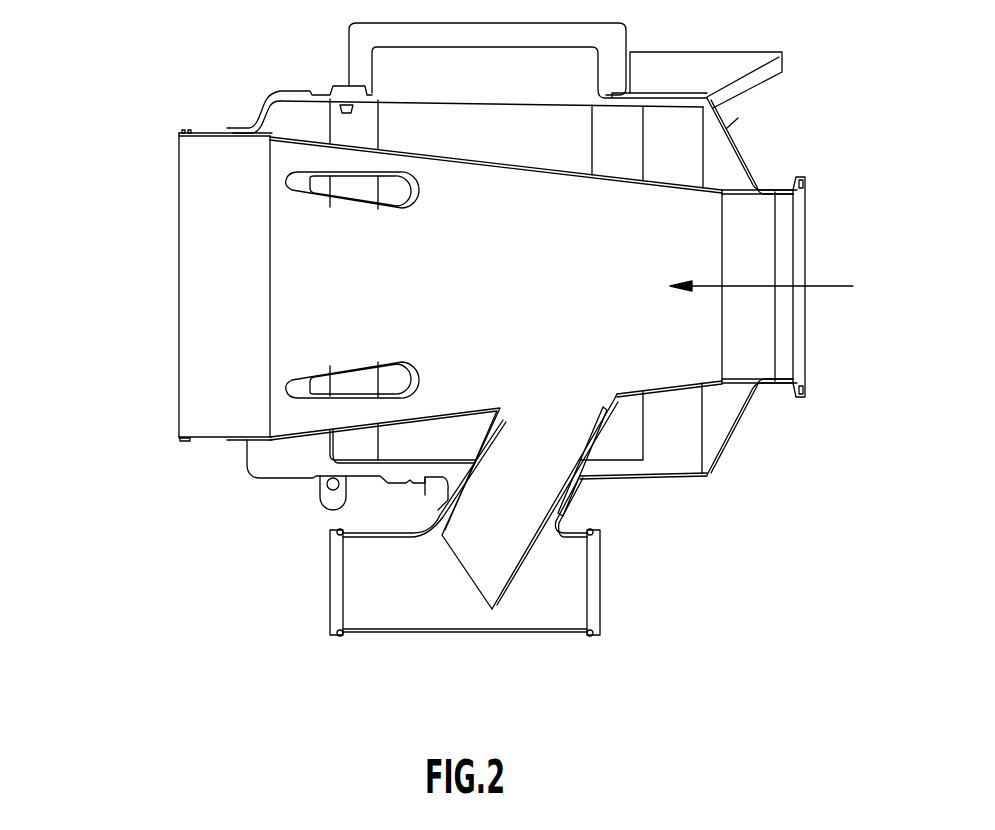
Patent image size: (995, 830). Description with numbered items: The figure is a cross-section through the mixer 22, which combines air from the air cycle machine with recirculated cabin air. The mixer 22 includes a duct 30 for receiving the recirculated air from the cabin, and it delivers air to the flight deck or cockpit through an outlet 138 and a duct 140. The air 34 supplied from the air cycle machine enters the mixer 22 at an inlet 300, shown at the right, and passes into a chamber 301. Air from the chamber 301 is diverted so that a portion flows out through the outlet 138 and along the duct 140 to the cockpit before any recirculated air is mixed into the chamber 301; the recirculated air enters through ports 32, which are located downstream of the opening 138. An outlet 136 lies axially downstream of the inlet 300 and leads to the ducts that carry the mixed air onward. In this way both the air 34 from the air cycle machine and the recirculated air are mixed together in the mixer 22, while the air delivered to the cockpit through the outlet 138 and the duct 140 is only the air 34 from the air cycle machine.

The mixer 22 is at (91, 64).
The duct 30 is at (388, 127).
The ports 32 is at (385, 197).
The air 34 is at (803, 283).
The inlet 300 is at (783, 225).
The chamber 301 is at (573, 311).
The outlet 136 is at (197, 277).
The outlet 138 is at (613, 403).
The duct 140 is at (332, 565).